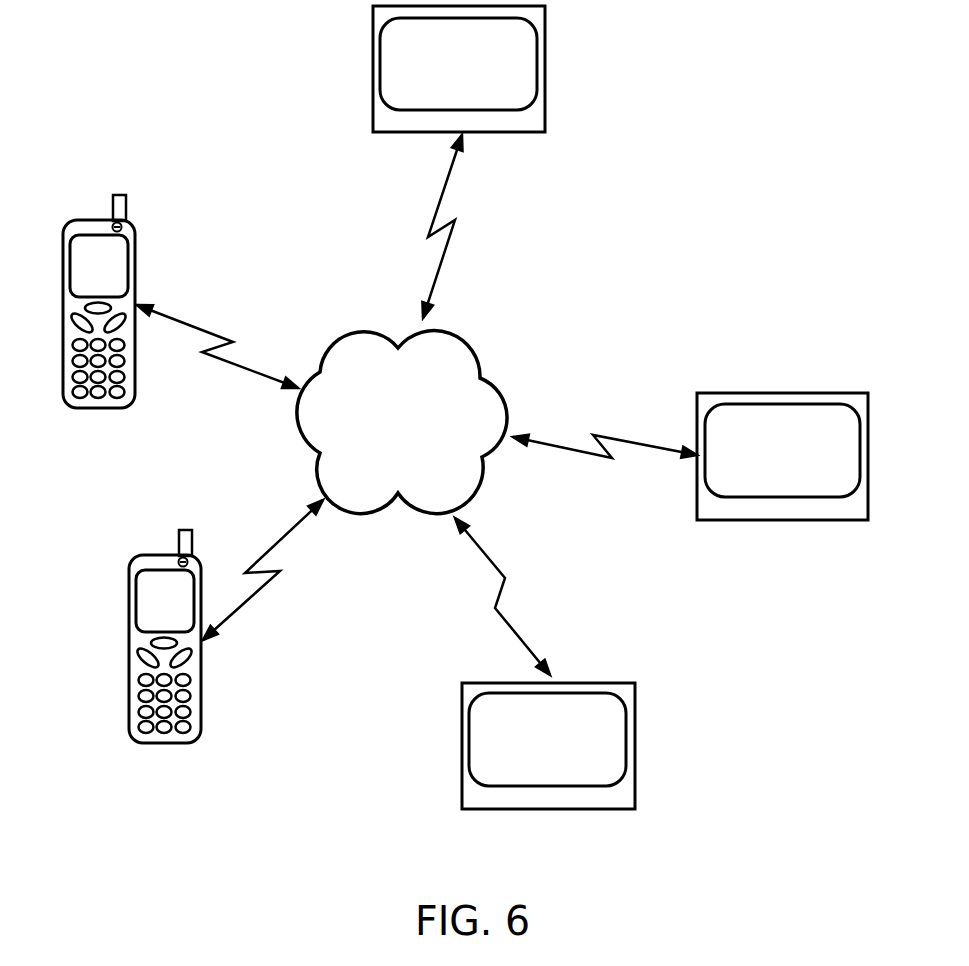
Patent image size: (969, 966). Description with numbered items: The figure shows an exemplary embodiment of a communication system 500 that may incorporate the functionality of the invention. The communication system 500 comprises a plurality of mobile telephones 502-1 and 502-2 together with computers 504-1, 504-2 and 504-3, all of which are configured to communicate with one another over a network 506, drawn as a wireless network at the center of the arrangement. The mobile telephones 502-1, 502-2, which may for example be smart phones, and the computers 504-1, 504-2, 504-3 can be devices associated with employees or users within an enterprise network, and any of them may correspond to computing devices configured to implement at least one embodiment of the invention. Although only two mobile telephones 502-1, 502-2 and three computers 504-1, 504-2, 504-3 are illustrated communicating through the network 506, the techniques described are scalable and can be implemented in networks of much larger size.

The communication system 500 is at (456, 407).
The mobile telephone 502-1 is at (70, 222).
The mobile telephone 502-2 is at (156, 620).
The computer 504-1 is at (545, 73).
The computer 504-2 is at (780, 393).
The computer 504-3 is at (635, 740).
The network 506 is at (423, 472).